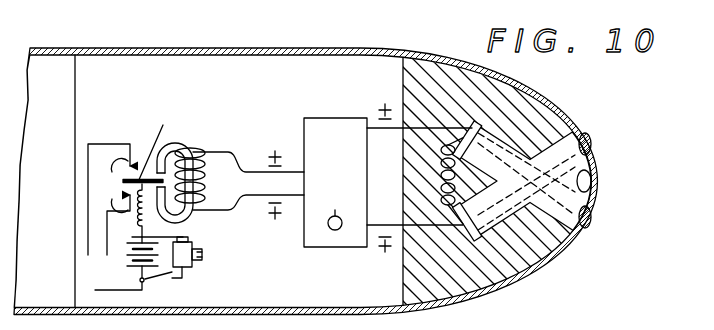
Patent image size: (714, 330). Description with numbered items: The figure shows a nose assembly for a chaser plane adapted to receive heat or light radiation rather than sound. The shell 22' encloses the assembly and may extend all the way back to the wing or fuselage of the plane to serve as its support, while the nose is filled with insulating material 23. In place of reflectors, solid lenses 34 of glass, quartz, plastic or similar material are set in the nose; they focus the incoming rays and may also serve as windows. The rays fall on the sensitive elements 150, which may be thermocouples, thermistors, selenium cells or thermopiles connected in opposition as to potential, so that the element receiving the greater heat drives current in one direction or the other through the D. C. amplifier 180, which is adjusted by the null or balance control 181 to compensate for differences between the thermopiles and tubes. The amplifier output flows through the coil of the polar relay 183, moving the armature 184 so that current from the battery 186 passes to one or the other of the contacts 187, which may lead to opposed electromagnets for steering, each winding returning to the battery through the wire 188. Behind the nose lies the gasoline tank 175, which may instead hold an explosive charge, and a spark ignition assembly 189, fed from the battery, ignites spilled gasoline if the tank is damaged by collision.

The shell 22' is at (305, 169).
The insulating material 23 is at (441, 64).
The solid lenses 34 is at (592, 142).
The sensitive elements 150 is at (471, 136).
The gasoline tank 175 is at (60, 150).
The D. C. amplifier 180 is at (352, 163).
The null or balance control 181 is at (331, 229).
The polar relay 183 is at (200, 134).
The armature 184 is at (161, 145).
The battery 186 is at (130, 257).
The contacts 187 is at (125, 199).
The wire 188 is at (130, 291).
The spark ignition assembly 189 is at (190, 267).